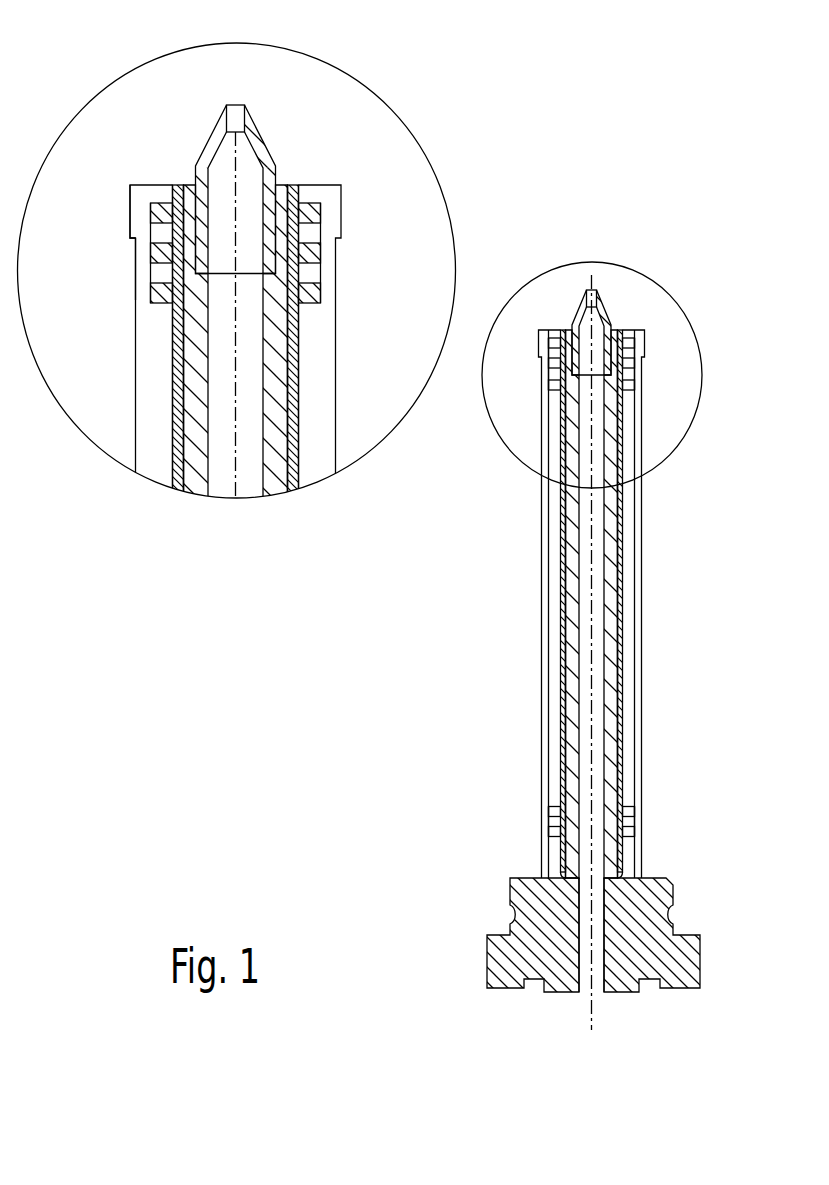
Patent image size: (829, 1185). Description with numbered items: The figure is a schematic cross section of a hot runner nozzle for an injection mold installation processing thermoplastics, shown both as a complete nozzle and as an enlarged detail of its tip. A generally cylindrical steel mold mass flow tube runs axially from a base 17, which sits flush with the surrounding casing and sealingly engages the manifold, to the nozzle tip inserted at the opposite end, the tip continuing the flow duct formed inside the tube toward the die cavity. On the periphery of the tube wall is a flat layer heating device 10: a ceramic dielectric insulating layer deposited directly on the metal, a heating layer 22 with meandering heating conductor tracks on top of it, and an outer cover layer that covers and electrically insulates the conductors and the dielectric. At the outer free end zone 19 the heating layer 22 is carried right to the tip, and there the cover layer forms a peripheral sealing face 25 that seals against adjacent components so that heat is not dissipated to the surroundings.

The heating device 10 is at (496, 601).
The base 17 is at (498, 960).
The end zone 19 is at (126, 248).
The heating layer 22 is at (674, 586).
The sealing face 25 is at (129, 208).